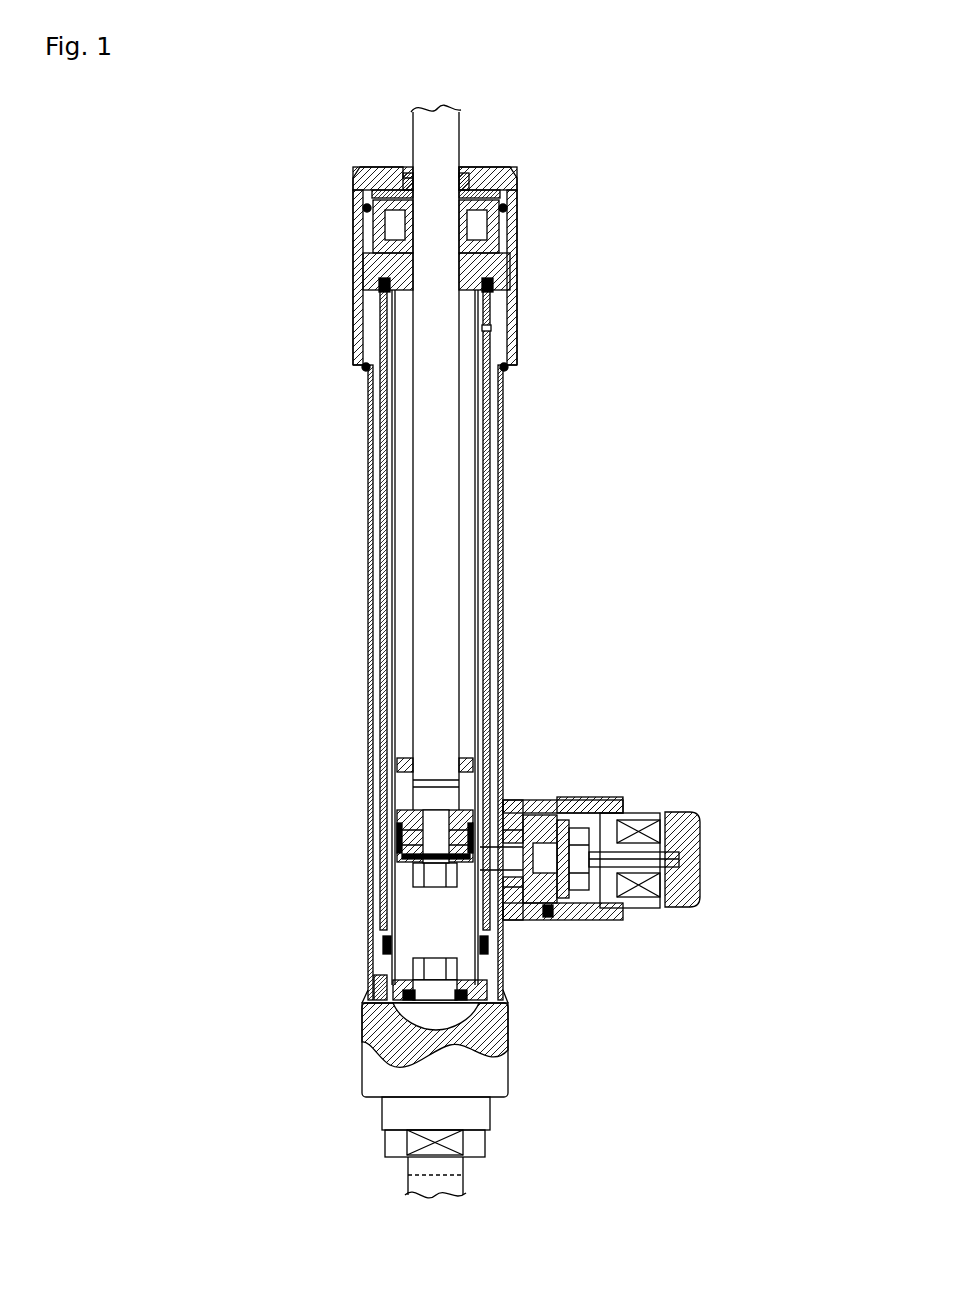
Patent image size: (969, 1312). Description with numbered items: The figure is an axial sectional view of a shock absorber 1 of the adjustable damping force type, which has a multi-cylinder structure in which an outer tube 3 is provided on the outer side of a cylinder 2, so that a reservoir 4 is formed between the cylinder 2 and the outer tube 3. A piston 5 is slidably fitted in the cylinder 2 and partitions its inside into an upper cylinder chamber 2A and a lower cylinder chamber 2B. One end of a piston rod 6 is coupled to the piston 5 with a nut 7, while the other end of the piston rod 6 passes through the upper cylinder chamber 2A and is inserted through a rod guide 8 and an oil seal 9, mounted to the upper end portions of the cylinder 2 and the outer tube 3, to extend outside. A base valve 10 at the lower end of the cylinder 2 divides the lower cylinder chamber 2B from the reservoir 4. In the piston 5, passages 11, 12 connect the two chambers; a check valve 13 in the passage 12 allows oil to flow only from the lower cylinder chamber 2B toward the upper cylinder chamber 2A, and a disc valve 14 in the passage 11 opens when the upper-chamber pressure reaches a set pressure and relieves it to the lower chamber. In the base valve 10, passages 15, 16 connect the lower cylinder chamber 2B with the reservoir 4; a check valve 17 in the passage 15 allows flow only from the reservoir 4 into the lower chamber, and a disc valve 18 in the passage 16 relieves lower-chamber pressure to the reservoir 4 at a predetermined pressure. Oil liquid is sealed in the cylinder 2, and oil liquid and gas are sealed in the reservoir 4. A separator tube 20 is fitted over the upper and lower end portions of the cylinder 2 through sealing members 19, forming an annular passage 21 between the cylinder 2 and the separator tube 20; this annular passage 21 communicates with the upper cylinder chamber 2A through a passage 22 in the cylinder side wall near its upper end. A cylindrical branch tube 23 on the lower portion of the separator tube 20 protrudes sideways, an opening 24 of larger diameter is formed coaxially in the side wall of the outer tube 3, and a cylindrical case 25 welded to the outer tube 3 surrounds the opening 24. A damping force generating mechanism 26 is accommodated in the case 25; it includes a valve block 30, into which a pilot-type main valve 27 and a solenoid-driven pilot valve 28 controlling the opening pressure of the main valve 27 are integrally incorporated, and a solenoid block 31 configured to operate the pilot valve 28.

The shock absorber 1 is at (604, 164).
The cylinder 2 is at (477, 428).
The upper cylinder chamber 2A is at (470, 607).
The lower cylinder chamber 2B is at (405, 912).
The outer tube 3 is at (502, 482).
The reservoir 4 is at (363, 523).
The piston 5 is at (400, 850).
The piston rod 6 is at (427, 150).
The nut 7 is at (422, 875).
The rod guide 8 is at (373, 262).
The oil seal 9 is at (464, 172).
The base valve 10 is at (508, 1015).
The passage 11 is at (397, 838).
The passage 12 is at (505, 802).
The check valve 13 is at (500, 800).
The disc valve 14 is at (402, 856).
The passage 15 is at (393, 1000).
The passage 16 is at (507, 1032).
The check valve 17 is at (372, 978).
The disc valve 18 is at (510, 1067).
The sealing members 19 is at (380, 283).
The separator tube 20 is at (375, 445).
The annular passage 21 is at (477, 537).
The passage 22 is at (477, 328).
The branch tube 23 is at (548, 802).
The opening 24 is at (512, 913).
The case 25 is at (567, 802).
The damping force generating mechanism 26 is at (632, 843).
The main valve 27 is at (590, 805).
The pilot valve 28 is at (608, 812).
The valve block 30 is at (547, 916).
The solenoid block 31 is at (688, 813).